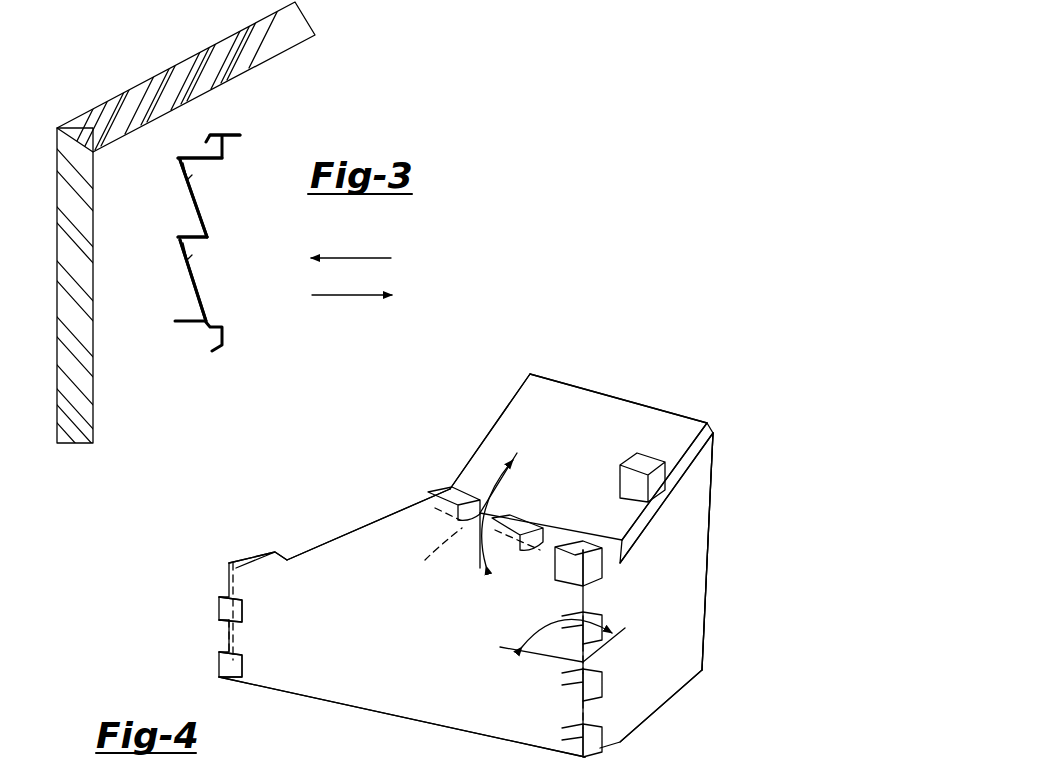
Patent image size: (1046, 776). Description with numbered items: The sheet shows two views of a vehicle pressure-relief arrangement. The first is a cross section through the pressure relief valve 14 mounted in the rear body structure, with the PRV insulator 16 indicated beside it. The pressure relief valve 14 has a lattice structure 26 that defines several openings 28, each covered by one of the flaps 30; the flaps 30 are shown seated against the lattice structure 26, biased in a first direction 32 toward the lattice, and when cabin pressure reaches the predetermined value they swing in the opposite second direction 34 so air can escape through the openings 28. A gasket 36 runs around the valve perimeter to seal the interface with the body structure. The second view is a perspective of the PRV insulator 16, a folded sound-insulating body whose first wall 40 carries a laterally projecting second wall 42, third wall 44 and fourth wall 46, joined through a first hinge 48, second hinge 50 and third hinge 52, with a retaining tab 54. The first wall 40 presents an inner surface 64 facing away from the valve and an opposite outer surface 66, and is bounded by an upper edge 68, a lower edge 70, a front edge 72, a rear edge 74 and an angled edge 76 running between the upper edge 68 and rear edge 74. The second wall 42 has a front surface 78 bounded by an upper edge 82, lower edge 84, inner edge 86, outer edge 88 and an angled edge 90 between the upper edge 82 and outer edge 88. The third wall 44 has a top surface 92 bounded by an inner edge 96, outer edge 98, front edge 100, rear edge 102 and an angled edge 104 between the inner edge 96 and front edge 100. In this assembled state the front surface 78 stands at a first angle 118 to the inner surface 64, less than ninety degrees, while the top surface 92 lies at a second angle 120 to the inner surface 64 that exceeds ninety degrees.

In FIG. 3, the pressure relief valve 14 is at (222, 360).
In FIG. 3, the PRV insulator 16 is at (150, 72).
In FIG. 4, the PRV insulator 16 is at (684, 382).
In FIG. 3, the lattice structure 26 is at (190, 157).
In FIG. 3, the openings 28 is at (192, 285).
In FIG. 3, the flaps 30 is at (203, 210).
In FIG. 3, the first direction 32 is at (373, 258).
In FIG. 3, the second direction 34 is at (341, 295).
In FIG. 3, the gasket 36 is at (212, 136).
In FIG. 4, the first wall 40 is at (388, 668).
In FIG. 4, the second wall 42 is at (688, 650).
In FIG. 4, the third wall 44 is at (552, 420).
In FIG. 4, the fourth wall 46 is at (253, 568).
In FIG. 4, the first hinge 48 is at (613, 655).
In FIG. 4, the second hinge 50 is at (478, 490).
In FIG. 4, the third hinge 52 is at (243, 642).
In FIG. 4, the retaining tab 54 is at (656, 471).
In FIG. 4, the inner surface 64 is at (427, 609).
In FIG. 4, the outer surface 66 is at (398, 508).
In FIG. 4, the upper edge 68 is at (510, 560).
In FIG. 4, the lower edge 70 is at (445, 722).
In FIG. 4, the front edge 72 is at (585, 592).
In FIG. 4, the rear edge 74 is at (215, 637).
In FIG. 4, the angled edge 76 is at (303, 548).
In FIG. 4, the front surface 78 is at (673, 603).
In FIG. 4, the upper edge 82 is at (650, 525).
In FIG. 4, the lower edge 84 is at (665, 710).
In FIG. 4, the inner edge 86 is at (580, 715).
In FIG. 4, the outer edge 88 is at (702, 618).
In FIG. 4, the angled edge 90 is at (718, 470).
In FIG. 4, the top surface 92 is at (598, 442).
In FIG. 4, the inner edge 96 is at (425, 560).
In FIG. 4, the outer edge 98 is at (661, 410).
In FIG. 4, the front edge 100 is at (716, 433).
In FIG. 4, the rear edge 102 is at (492, 423).
In FIG. 4, the angled edge 104 is at (607, 547).
In FIG. 4, the first angle 118 is at (550, 625).
In FIG. 4, the second angle 120 is at (518, 505).